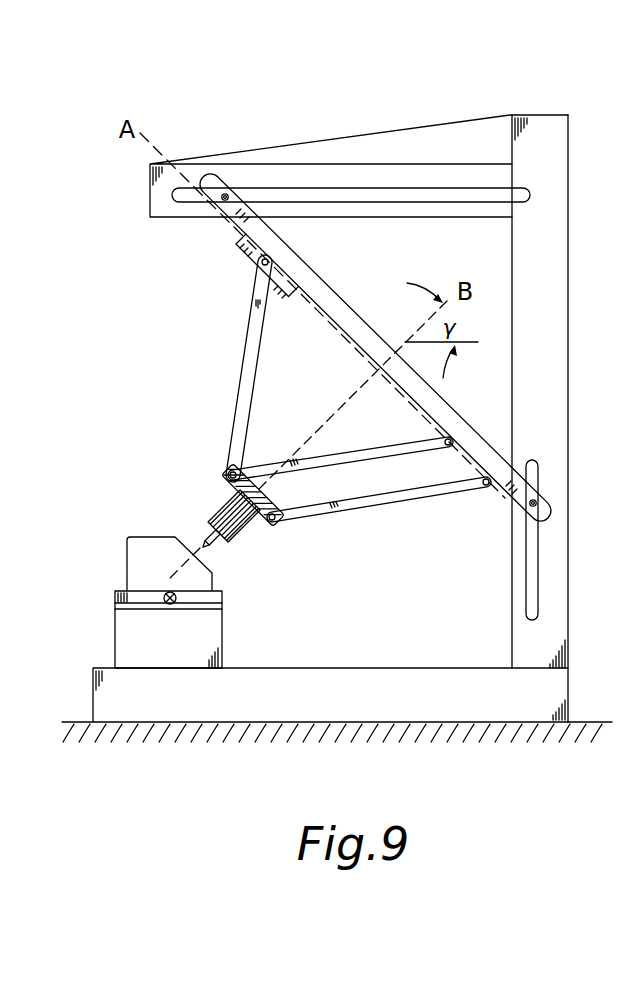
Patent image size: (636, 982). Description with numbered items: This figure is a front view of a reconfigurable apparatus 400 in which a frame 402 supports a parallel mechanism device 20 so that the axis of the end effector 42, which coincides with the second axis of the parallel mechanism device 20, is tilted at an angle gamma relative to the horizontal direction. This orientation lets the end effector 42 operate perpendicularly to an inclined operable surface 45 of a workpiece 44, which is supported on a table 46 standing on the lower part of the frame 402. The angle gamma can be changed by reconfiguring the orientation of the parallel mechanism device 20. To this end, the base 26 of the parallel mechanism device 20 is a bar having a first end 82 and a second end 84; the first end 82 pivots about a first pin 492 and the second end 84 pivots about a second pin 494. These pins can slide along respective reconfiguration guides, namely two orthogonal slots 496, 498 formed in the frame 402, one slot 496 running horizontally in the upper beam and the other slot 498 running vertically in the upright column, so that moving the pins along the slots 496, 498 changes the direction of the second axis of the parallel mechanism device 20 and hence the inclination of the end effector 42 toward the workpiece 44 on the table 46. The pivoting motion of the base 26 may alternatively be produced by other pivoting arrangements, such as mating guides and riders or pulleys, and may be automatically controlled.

The reconfigurable apparatus 400 is at (220, 108).
The frame 402 is at (567, 285).
The slot 496 is at (377, 195).
The slot 498 is at (536, 468).
The base 26 is at (318, 288).
The first end 82 is at (213, 180).
The first pin 492 is at (228, 196).
The second pin 494 is at (543, 500).
The second end 84 is at (545, 515).
The parallel mechanism device 20 is at (234, 351).
The end effector 42 is at (240, 525).
The inclined operable surface 45 is at (199, 545).
The workpiece 44 is at (137, 573).
The table 46 is at (125, 636).